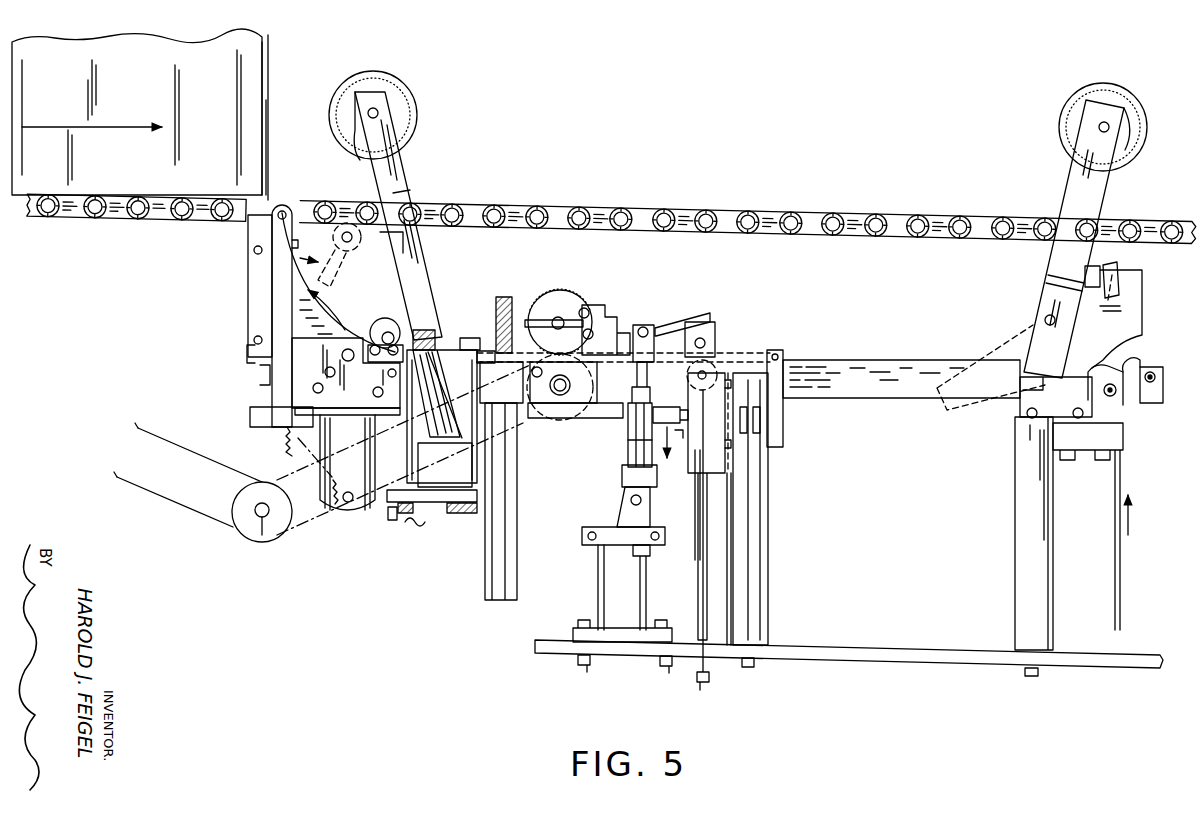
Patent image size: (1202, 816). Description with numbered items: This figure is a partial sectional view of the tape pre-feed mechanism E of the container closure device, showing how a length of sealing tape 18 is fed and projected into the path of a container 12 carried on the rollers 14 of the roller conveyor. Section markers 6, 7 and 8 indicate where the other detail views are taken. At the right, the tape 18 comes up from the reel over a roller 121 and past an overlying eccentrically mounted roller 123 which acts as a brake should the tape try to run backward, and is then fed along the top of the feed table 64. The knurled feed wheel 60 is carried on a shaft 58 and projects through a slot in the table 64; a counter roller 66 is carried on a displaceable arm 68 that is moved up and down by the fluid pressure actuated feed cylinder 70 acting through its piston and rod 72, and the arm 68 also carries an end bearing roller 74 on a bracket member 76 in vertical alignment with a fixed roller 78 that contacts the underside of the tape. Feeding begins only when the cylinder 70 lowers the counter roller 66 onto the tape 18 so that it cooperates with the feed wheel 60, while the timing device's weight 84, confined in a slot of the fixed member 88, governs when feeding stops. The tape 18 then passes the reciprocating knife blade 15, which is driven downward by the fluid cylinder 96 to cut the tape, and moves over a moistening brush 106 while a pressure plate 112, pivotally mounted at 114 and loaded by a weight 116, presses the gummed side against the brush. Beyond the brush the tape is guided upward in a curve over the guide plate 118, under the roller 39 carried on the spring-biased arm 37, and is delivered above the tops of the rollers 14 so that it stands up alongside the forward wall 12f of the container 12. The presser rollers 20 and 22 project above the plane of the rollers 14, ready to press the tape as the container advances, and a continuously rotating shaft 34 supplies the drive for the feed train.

The container 12 is at (110, 32).
The forward wall 12f is at (268, 58).
The rollers 14 is at (622, 213).
The sealing tape 18 is at (360, 310).
The presser roller 20 is at (412, 108).
The roller 22 is at (1142, 120).
The shaft 34 is at (264, 540).
The arm 37 is at (268, 268).
The roller 39 is at (280, 205).
The shaft 58 is at (560, 400).
The knurled feed wheel 60 is at (572, 385).
The feed table 64 is at (866, 365).
The counter roller 66 is at (568, 295).
The displaceable arm 68 is at (610, 305).
The feed cylinder 70 is at (628, 455).
The piston and rod 72 is at (648, 380).
The end bearing roller 74 is at (716, 340).
The bracket member 76 is at (712, 320).
The fixed roller 78 is at (748, 355).
The weight 84 is at (695, 550).
The fixed member 88 is at (700, 600).
The fluid cylinder 96 is at (485, 560).
The moistening brush 106 is at (420, 425).
The pressure plate 112 is at (443, 345).
The pivot 114 is at (472, 338).
The weight 116 is at (424, 327).
The guide plate 118 is at (290, 300).
The roller 121 is at (1116, 396).
The eccentrically mounted roller 123 is at (1150, 365).
The knife blade 15 is at (512, 295).
The section line 6- 6 is at (528, 235).
The section line 7- 7 is at (407, 300).
The section line 8- 8 is at (307, 180).
The tape pre-feed mechanism E is at (730, 290).